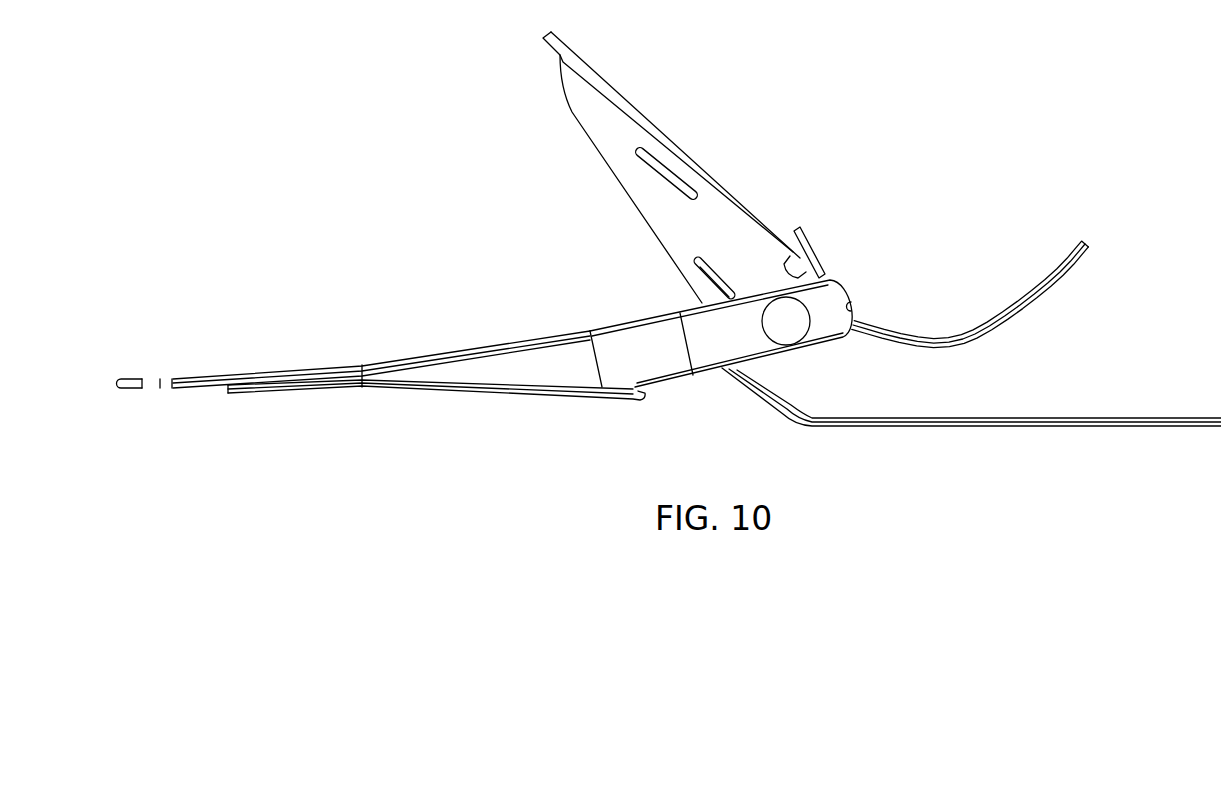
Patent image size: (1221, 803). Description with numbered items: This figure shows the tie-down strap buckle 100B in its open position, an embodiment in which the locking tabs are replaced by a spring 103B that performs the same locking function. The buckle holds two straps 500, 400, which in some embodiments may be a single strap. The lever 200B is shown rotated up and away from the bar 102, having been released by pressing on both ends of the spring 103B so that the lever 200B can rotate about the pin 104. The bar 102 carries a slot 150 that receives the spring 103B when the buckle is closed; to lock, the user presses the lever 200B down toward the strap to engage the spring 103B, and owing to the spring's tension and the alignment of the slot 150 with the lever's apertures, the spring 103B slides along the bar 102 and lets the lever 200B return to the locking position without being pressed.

The tie-down strap buckle 100B is at (1056, 100).
The lever 200B is at (635, 108).
The spring 103B is at (706, 271).
The bar 102 is at (683, 380).
The pin 104 is at (796, 327).
The slot 150 is at (851, 305).
The strap 400 is at (1086, 261).
The strap 500 is at (333, 390).